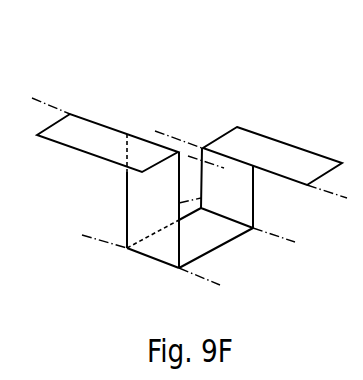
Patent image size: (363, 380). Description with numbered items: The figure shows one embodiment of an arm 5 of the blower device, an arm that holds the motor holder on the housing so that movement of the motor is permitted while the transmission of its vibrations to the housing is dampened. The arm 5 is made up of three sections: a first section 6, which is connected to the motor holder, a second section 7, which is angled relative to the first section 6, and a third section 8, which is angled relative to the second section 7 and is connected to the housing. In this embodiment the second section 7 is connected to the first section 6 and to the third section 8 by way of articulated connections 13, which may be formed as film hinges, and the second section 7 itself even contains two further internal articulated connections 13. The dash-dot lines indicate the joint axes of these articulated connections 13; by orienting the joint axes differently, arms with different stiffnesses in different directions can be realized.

The arm 5 is at (189, 173).
The first section 6 is at (93, 137).
The second section 7 is at (145, 203).
The third section 8 is at (300, 162).
The articulated connection 13 is at (153, 132).